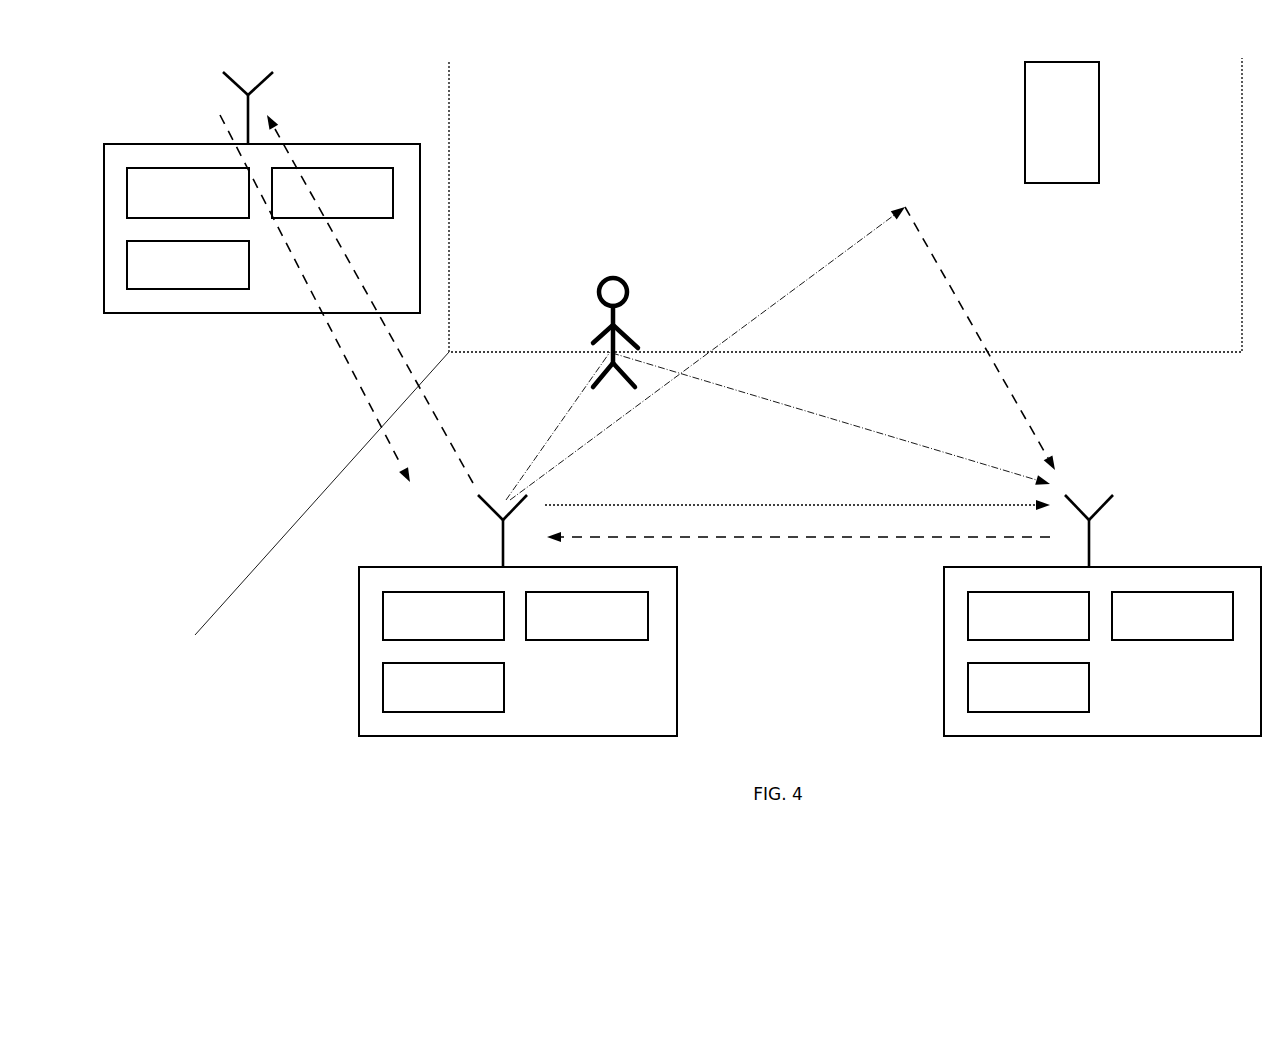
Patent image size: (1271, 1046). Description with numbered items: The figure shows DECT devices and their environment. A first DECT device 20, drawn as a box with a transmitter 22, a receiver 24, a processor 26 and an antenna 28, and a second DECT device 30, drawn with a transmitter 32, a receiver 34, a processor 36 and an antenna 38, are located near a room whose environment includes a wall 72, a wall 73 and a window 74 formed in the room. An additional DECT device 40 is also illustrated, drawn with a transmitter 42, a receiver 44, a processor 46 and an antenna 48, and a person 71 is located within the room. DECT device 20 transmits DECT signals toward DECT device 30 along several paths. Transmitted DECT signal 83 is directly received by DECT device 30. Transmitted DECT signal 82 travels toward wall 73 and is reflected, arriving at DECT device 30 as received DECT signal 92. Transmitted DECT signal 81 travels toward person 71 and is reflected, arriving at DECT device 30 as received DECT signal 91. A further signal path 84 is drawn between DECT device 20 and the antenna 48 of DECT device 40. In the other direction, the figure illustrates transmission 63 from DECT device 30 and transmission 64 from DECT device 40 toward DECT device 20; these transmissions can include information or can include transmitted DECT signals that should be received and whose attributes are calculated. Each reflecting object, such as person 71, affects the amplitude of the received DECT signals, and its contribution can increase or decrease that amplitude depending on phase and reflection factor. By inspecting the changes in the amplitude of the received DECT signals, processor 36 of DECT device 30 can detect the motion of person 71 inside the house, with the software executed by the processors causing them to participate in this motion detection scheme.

The DECT device 20 is at (518, 615).
The transmitter 22 is at (432, 636).
The receiver 24 is at (576, 636).
The processor 26 is at (432, 708).
The antenna 28 is at (490, 510).
The DECT device 30 is at (1102, 615).
The transmitter 32 is at (1017, 636).
The receiver 34 is at (1161, 636).
The processor 36 is at (1017, 708).
The antenna 38 is at (1077, 508).
The additional DECT device 40 is at (262, 192).
The transmitter 42 is at (177, 215).
The receiver 44 is at (321, 215).
The processor 46 is at (177, 286).
The antenna 48 is at (237, 87).
The transmission 63 is at (843, 538).
The transmission 64 is at (337, 335).
The person 71 is at (615, 275).
The wall 72 is at (175, 453).
The wall 73 is at (782, 174).
The window 74 is at (1051, 131).
The transmitted DECT signal 81 is at (530, 453).
The transmitted DECT signal 82 is at (627, 423).
The transmitted DECT signal 83 is at (697, 490).
The signal path to third device 84 is at (447, 432).
The received DECT signal 91 is at (917, 447).
The received DECT signal 92 is at (972, 322).